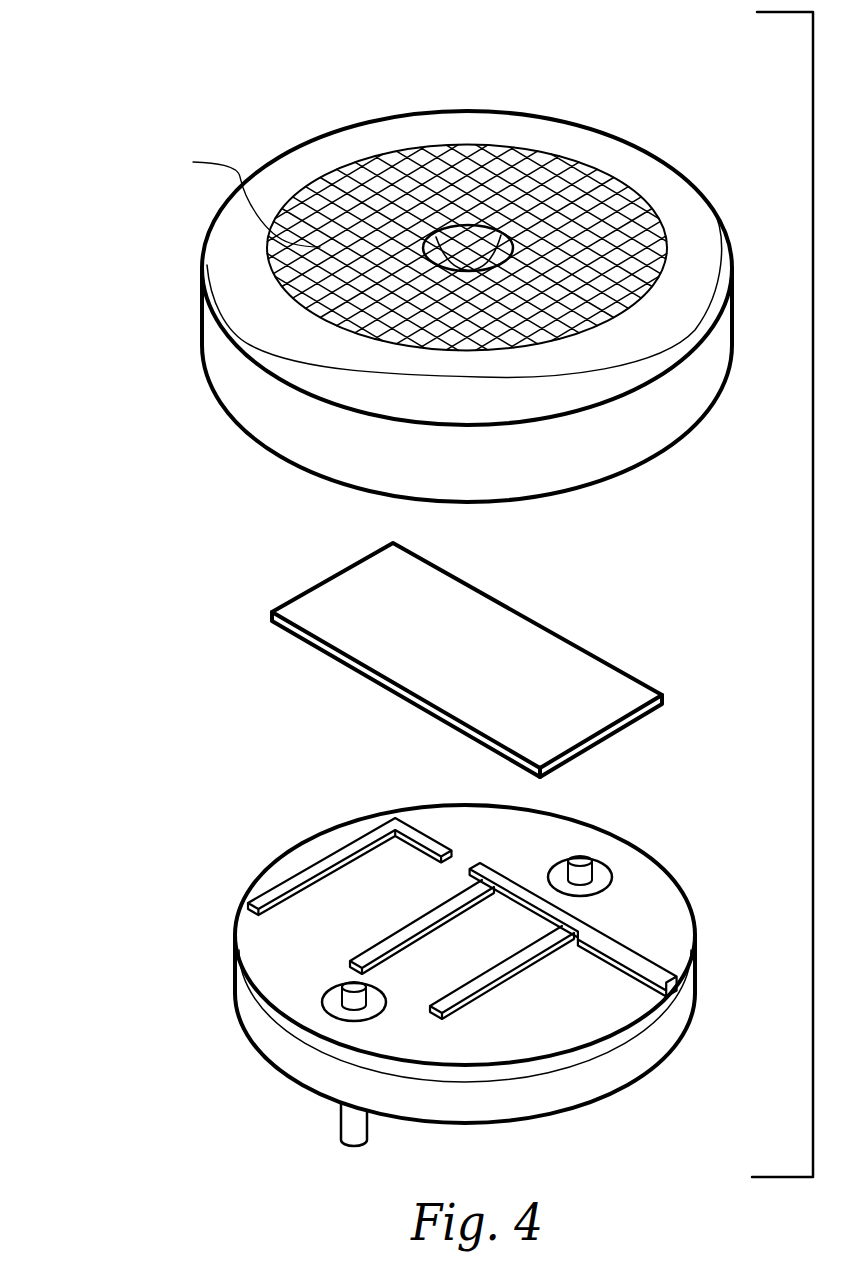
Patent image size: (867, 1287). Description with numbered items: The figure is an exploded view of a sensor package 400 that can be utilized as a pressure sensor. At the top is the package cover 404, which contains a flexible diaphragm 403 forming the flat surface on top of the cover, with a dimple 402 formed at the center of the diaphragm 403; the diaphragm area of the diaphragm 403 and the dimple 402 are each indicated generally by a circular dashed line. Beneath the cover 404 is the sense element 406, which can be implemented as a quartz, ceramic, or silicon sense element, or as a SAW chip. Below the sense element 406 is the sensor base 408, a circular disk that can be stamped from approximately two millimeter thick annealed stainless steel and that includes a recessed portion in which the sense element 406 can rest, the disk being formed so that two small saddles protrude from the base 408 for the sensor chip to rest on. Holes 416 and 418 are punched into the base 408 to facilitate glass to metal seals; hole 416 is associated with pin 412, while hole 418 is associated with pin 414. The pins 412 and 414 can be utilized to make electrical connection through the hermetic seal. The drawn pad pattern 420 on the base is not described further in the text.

The sensor package 400 is at (698, 131).
The dimple 402 is at (513, 248).
The diaphragm 403 is at (355, 197).
The package cover 404 is at (203, 328).
The sense element 406 is at (328, 602).
The sensor base 408 is at (663, 937).
The pin 412 is at (352, 985).
The pin 414 is at (578, 858).
The hole 416 is at (327, 1010).
The hole 418 is at (600, 878).
The conductive pad pattern 420 is at (347, 907).